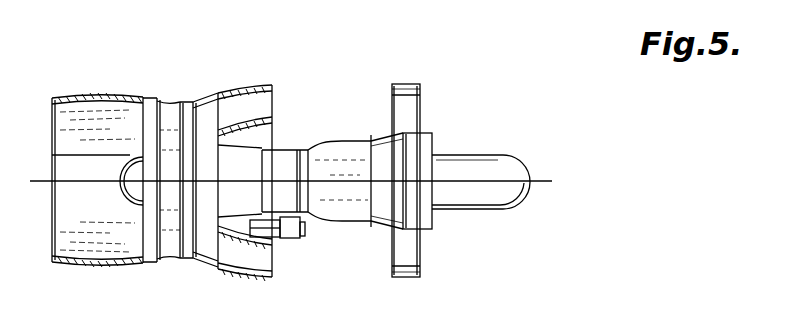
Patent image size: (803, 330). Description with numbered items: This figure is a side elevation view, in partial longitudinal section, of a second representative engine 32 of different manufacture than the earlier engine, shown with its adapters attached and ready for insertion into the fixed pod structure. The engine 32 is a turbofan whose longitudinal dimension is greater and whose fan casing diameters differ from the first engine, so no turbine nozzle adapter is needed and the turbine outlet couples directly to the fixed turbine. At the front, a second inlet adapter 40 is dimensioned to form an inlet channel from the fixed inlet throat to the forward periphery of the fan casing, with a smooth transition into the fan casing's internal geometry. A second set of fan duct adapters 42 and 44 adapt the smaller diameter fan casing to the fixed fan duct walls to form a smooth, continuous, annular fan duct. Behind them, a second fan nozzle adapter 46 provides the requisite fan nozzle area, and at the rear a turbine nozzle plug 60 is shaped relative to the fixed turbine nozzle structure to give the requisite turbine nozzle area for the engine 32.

The second inlet adapter 40 is at (93, 96).
The fan duct adapter 42 is at (245, 277).
The second representative engine 32 is at (285, 158).
The fan duct adapter 44 is at (260, 248).
The second fan nozzle adapter 46 is at (405, 279).
The turbine nozzle plug 60 is at (512, 175).